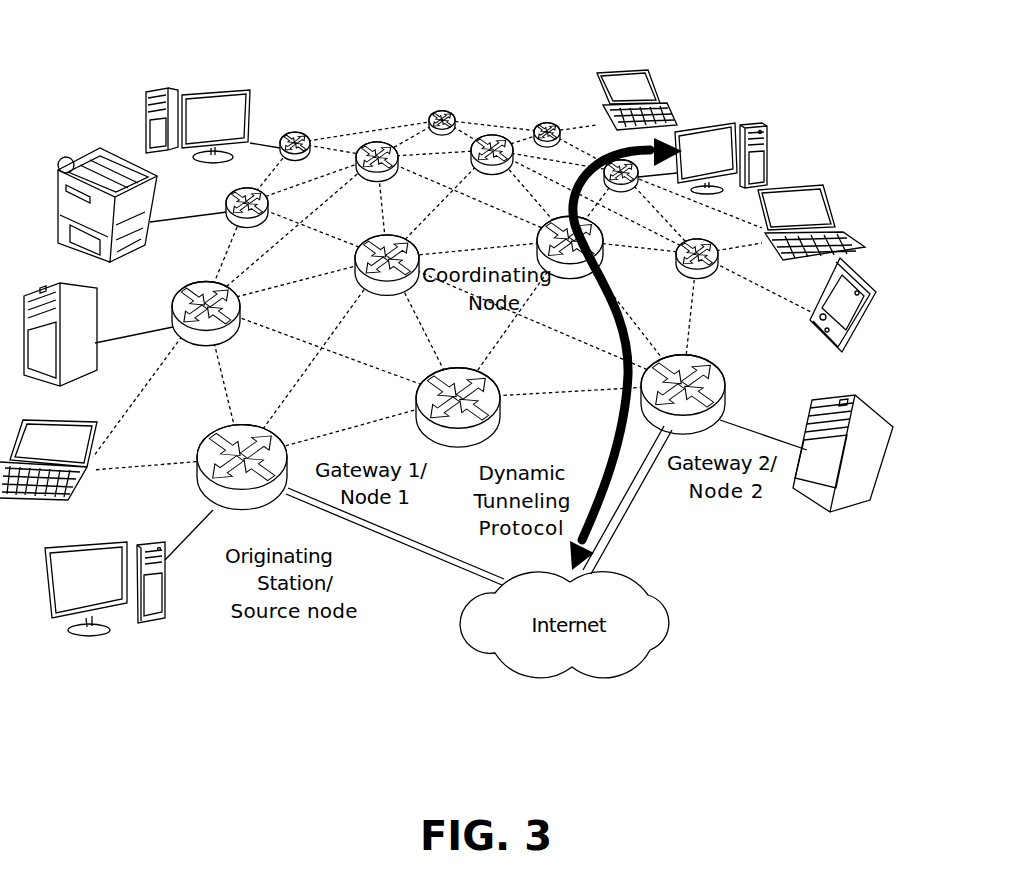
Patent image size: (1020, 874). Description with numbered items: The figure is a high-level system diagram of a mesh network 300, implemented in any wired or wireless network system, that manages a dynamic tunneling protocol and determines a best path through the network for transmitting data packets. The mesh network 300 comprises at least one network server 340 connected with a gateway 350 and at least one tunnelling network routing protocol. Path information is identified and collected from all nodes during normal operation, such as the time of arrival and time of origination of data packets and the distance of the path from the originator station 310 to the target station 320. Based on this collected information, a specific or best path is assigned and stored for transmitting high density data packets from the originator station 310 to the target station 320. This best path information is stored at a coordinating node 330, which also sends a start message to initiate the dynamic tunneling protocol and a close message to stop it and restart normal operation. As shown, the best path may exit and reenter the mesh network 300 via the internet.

The mesh network 300 is at (453, 246).
The originator station 310 is at (326, 498).
The target station 320 is at (747, 116).
The coordinating node 330 is at (387, 291).
The network server 340 is at (98, 334).
The gateway 350 is at (806, 450).